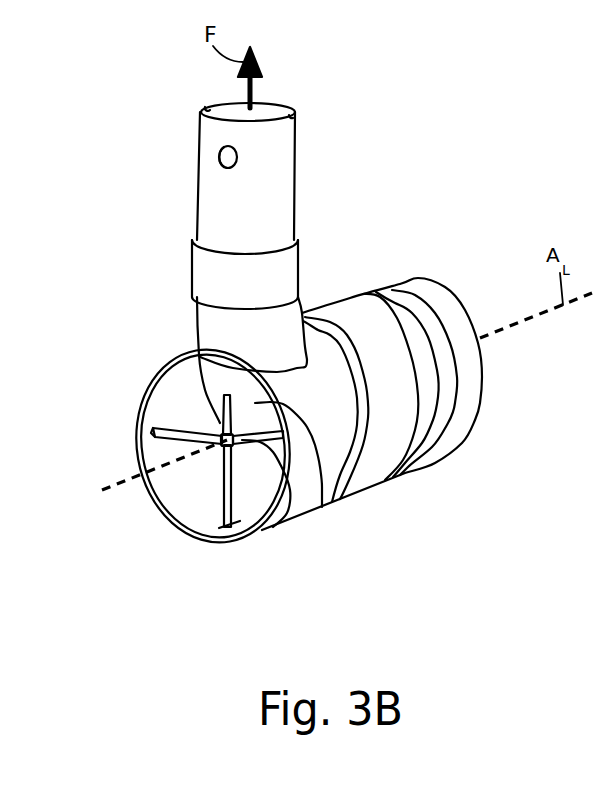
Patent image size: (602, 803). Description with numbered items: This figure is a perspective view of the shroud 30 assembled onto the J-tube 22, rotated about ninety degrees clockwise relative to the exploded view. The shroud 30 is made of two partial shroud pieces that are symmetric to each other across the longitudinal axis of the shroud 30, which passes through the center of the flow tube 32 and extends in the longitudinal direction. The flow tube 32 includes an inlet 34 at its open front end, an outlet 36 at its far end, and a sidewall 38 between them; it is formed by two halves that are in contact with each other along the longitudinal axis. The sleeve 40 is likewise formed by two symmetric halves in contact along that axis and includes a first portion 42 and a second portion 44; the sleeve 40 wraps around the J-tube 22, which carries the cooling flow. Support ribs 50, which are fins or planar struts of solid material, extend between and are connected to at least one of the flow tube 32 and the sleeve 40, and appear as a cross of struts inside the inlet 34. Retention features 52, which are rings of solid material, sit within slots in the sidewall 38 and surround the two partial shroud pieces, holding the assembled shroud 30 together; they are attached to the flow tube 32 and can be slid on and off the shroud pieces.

The J-tube 22 is at (303, 150).
The shroud 30 is at (456, 283).
The flow tube 32 is at (377, 323).
The inlet 34 is at (178, 505).
The outlet 36 is at (422, 278).
The sidewall 38 is at (344, 314).
The sleeve 40 is at (186, 312).
The first portion 42 is at (322, 507).
The second portion 44 is at (213, 268).
The support ribs 50 is at (187, 423).
The retention features 52 is at (384, 430).